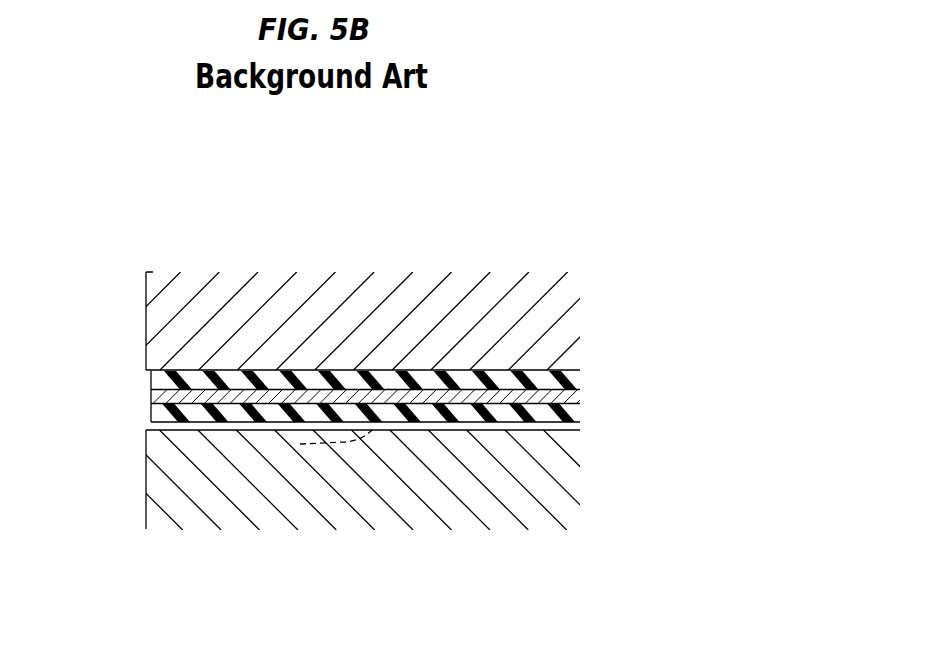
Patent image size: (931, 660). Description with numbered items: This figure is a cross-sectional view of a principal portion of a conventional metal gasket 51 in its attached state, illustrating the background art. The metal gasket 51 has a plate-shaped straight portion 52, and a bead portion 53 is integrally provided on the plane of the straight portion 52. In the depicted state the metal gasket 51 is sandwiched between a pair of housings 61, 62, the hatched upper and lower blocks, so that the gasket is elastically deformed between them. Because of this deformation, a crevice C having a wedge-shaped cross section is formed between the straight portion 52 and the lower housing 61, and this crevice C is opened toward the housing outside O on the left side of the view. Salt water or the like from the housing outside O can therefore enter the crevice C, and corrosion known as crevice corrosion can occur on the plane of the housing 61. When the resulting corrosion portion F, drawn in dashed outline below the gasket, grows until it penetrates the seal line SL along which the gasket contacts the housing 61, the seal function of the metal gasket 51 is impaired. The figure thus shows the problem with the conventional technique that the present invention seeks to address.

The metal gasket 51 is at (402, 401).
The straight portion 52 is at (274, 396).
The bead portion 53 is at (433, 393).
The housing 61 is at (496, 513).
The housing 62 is at (496, 282).
The crevice C is at (215, 430).
The corrosion portion F is at (300, 444).
The seal line SL is at (318, 426).
The housing outside O is at (42, 417).